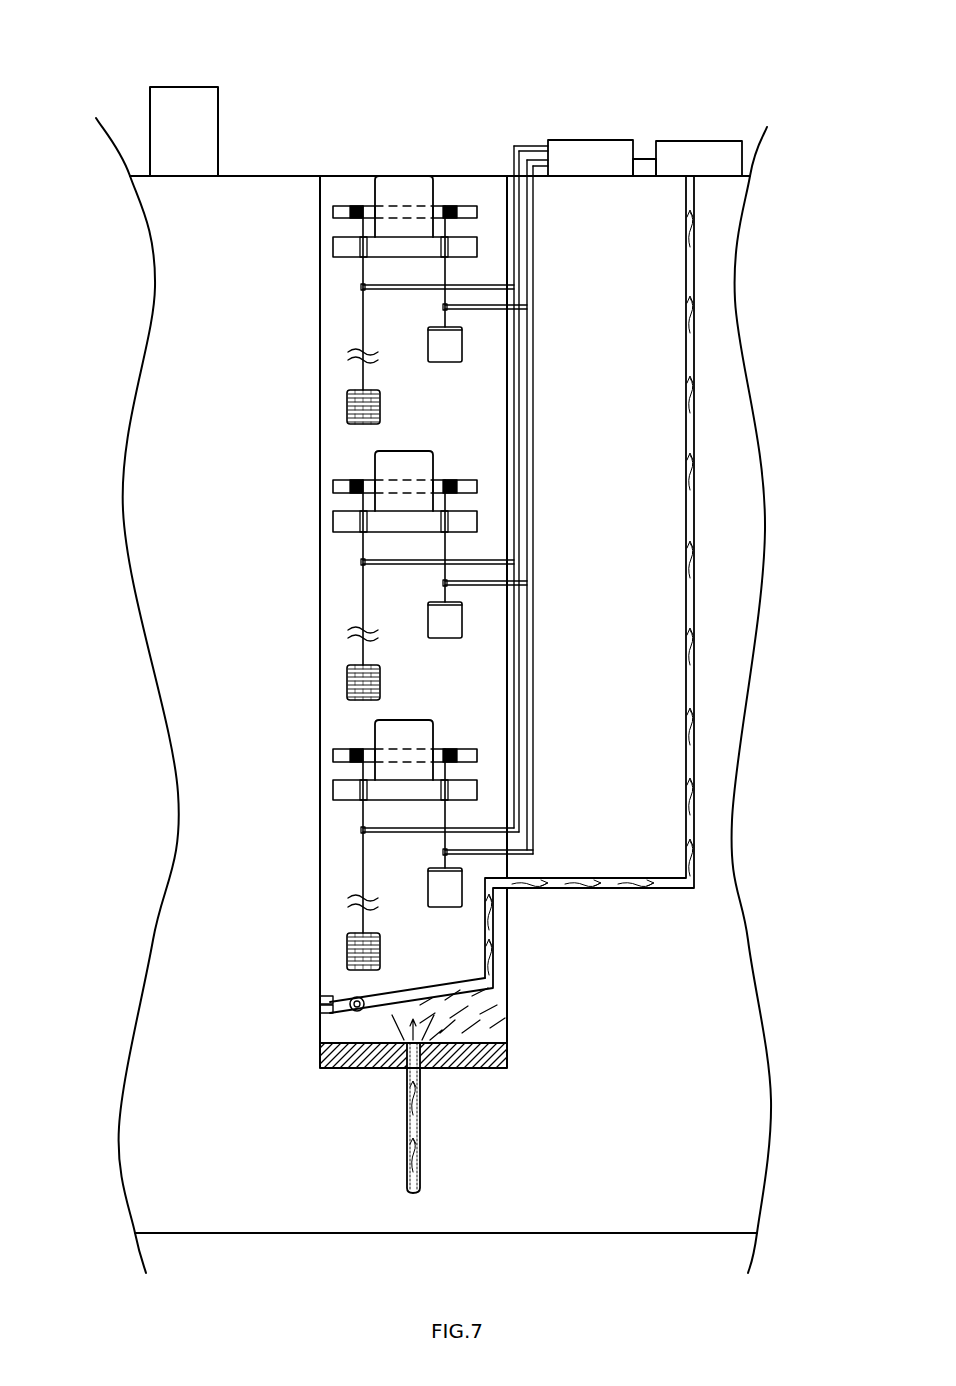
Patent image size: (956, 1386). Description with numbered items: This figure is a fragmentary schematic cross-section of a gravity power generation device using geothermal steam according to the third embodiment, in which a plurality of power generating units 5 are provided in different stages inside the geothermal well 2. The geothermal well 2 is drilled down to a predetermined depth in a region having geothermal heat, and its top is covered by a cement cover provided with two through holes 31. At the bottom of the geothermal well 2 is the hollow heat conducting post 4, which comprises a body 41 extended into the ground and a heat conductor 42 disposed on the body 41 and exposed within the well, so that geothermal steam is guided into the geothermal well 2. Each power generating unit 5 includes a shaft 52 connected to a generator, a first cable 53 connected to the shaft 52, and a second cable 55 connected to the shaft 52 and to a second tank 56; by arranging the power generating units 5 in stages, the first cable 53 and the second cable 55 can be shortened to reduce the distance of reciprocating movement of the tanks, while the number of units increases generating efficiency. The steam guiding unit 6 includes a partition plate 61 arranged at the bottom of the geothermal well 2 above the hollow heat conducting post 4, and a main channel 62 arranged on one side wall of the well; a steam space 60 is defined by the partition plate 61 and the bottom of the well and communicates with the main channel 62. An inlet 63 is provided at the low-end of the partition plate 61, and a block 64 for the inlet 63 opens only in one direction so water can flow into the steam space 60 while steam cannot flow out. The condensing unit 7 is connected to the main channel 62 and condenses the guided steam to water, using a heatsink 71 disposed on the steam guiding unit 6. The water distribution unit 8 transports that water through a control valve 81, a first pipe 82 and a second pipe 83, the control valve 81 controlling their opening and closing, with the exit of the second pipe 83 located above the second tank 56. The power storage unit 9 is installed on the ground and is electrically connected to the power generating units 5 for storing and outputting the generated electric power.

The geothermal well 2 is at (298, 328).
The power storage unit 9 is at (232, 75).
The hollow heat conducting post 4 is at (466, 1093).
The body 41 is at (420, 190).
The heat conductor 42 is at (386, 1066).
The power generating unit 5 is at (450, 186).
The shaft 52 is at (368, 209).
The through hole 31 is at (358, 237).
The first cable 53 is at (362, 311).
The second cable 55 is at (443, 300).
The second tank 56 is at (443, 363).
The second pipe 83 is at (535, 237).
The first pipe 82 is at (530, 146).
The water distribution unit 8 is at (588, 117).
The control valve 81 is at (615, 138).
The heatsink 71 is at (700, 138).
The condensing unit 7 is at (707, 192).
The steam guiding unit 6 is at (585, 957).
The main channel 62 is at (500, 955).
The partition plate 61 is at (478, 985).
The steam space 60 is at (483, 1033).
The inlet 63 is at (328, 998).
The block 64 is at (338, 1012).